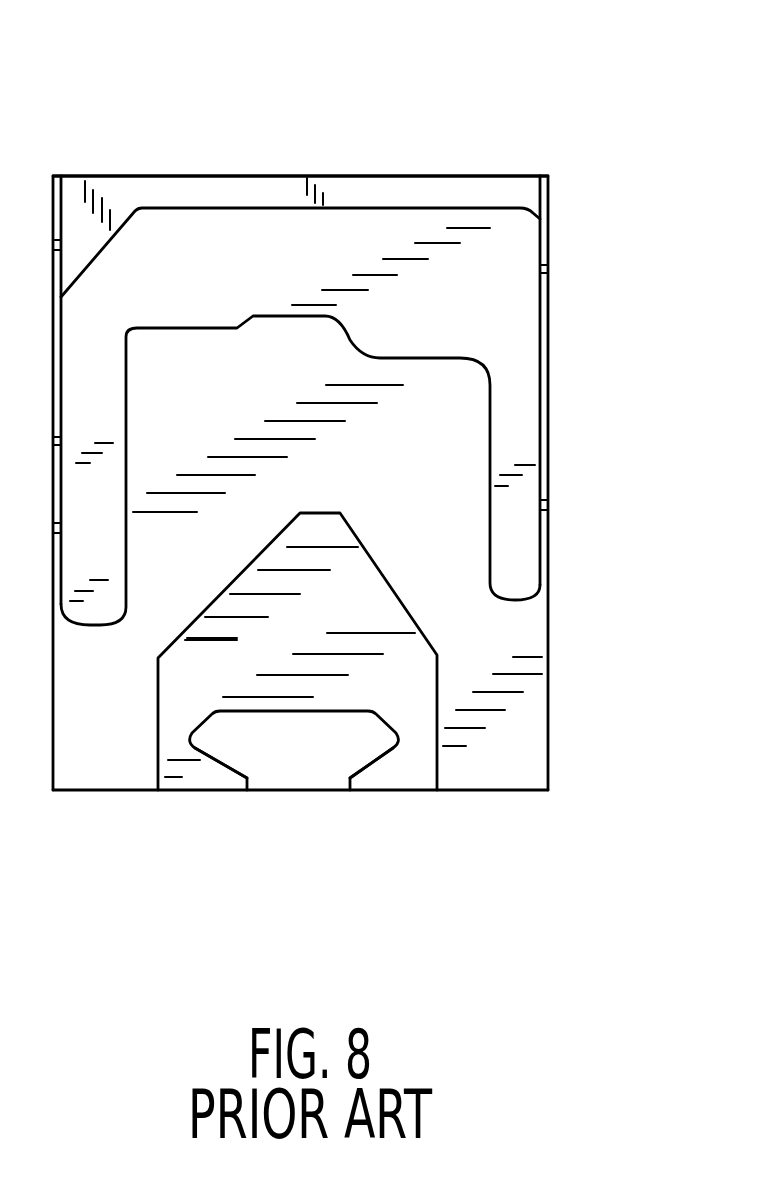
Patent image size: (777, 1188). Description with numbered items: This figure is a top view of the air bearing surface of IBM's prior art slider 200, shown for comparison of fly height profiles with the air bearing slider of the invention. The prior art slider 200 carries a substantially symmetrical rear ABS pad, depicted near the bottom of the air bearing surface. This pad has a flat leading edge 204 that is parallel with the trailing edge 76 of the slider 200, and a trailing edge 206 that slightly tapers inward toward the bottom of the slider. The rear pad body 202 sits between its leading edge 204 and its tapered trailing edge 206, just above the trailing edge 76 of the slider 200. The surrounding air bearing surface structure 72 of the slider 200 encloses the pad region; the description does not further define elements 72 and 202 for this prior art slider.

The shield housing 72 is at (438, 166).
The prior art slider 200 is at (592, 257).
The flat leading edge 204 is at (338, 710).
The connector body 202 is at (285, 760).
The trailing edge 206 is at (212, 760).
The trailing edge 76 is at (117, 803).